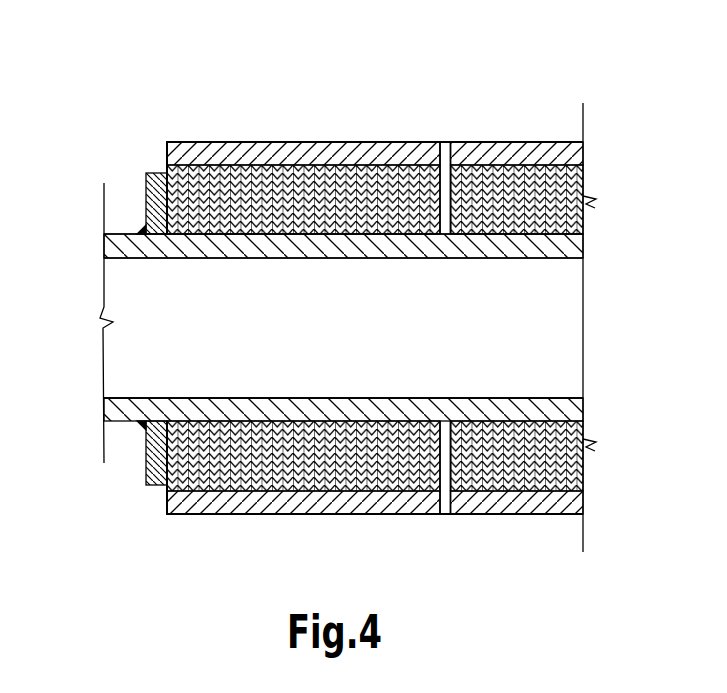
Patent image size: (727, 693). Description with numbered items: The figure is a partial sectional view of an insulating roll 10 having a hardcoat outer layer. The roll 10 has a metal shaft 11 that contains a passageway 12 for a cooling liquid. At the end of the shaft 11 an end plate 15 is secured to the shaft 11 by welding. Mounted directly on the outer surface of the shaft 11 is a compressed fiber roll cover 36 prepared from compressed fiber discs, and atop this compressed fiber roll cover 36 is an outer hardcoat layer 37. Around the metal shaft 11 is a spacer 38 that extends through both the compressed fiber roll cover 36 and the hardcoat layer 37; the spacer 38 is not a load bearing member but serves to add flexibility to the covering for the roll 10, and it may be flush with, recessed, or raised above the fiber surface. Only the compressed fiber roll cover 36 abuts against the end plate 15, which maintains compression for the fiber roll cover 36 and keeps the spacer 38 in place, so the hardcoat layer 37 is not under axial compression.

The roll 10 is at (498, 115).
The metal shaft 11 is at (121, 428).
The passageway 12 is at (157, 320).
The end plate 15 is at (143, 178).
The compressed fiber roll cover 36 is at (510, 488).
The hardcoat layer 37 is at (282, 515).
The spacer 38 is at (445, 140).